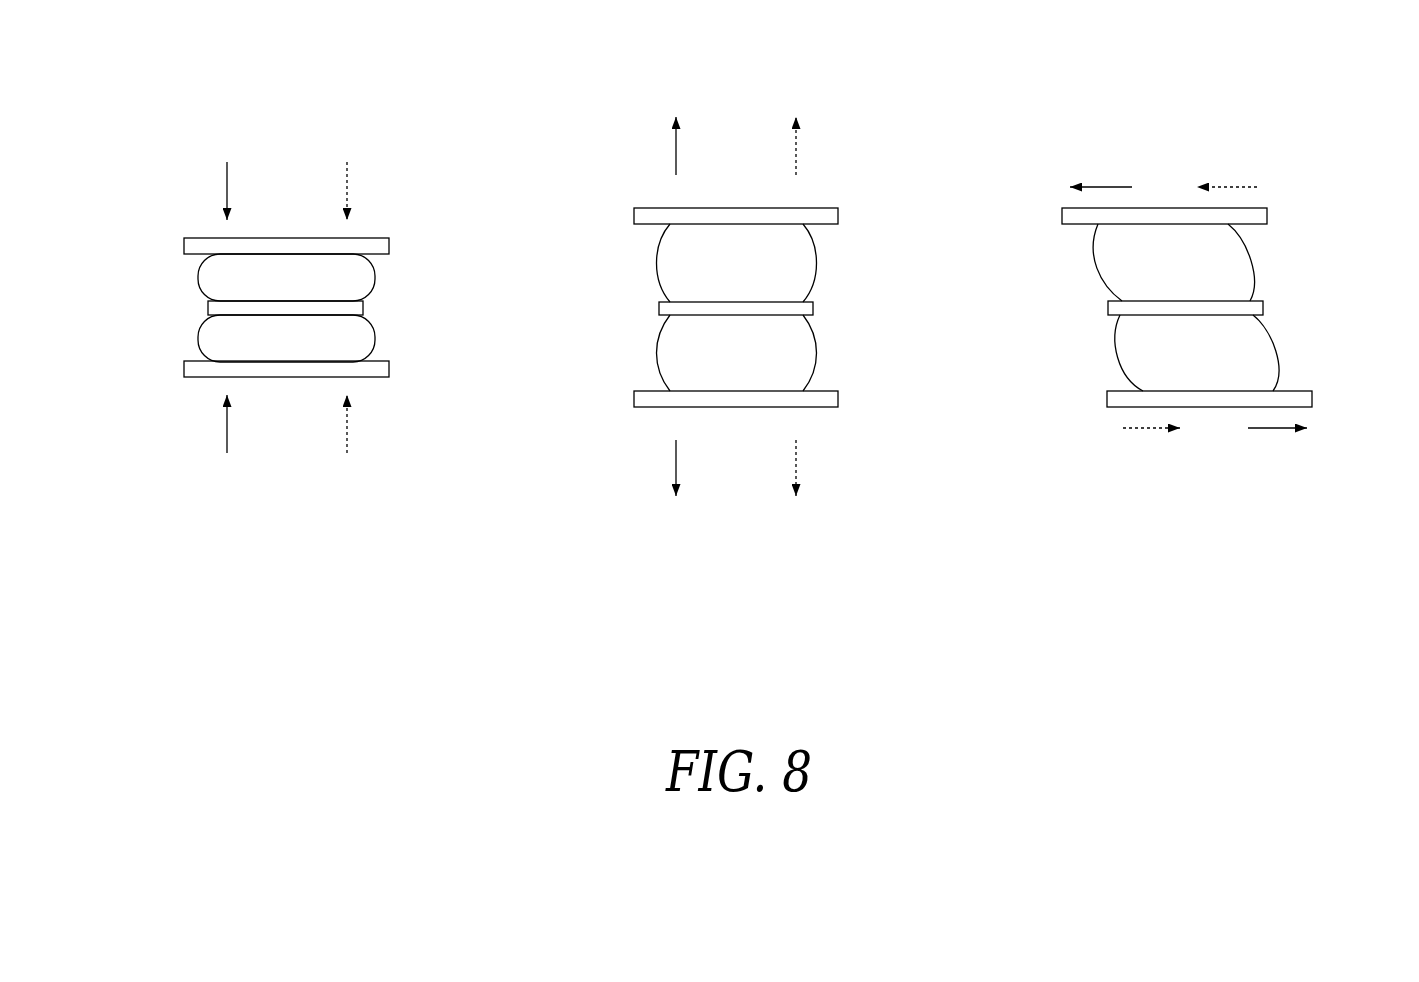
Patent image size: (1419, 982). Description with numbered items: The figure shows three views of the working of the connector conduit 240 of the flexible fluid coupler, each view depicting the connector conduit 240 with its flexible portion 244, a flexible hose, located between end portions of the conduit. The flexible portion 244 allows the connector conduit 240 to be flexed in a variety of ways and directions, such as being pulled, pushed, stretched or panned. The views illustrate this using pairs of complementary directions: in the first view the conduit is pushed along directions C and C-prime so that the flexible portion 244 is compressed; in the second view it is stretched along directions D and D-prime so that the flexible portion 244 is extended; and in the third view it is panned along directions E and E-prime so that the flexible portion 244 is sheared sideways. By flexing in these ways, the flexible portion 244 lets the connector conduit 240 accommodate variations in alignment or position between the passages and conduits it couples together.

The connector conduit 240 is at (162, 172).
The flexible portion 244 is at (391, 254).
The complementary directions C-C' C is at (277, 307).
The complementary directions D-D' D is at (725, 306).
The complementary directions E-E' E is at (1188, 310).